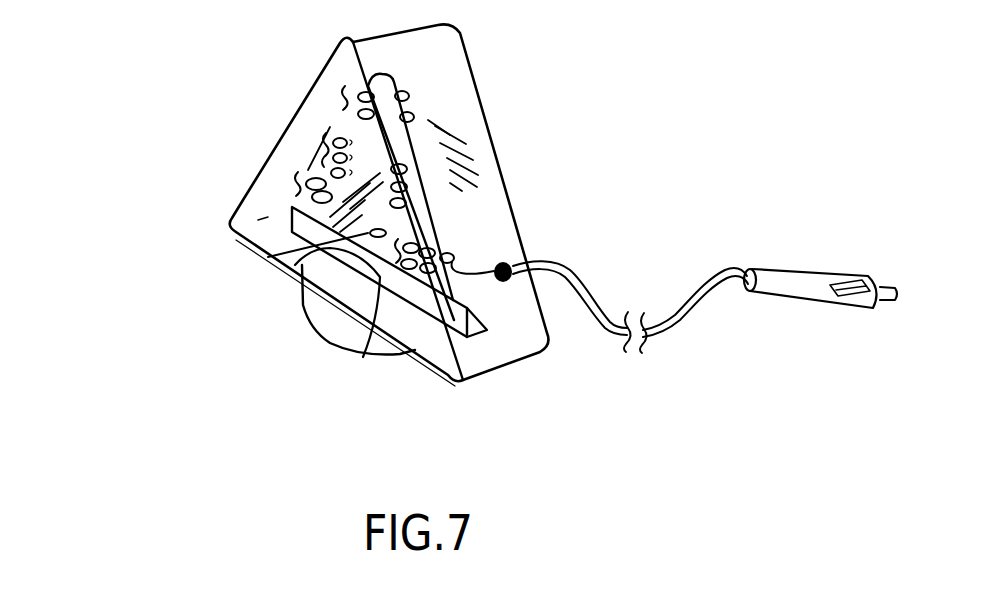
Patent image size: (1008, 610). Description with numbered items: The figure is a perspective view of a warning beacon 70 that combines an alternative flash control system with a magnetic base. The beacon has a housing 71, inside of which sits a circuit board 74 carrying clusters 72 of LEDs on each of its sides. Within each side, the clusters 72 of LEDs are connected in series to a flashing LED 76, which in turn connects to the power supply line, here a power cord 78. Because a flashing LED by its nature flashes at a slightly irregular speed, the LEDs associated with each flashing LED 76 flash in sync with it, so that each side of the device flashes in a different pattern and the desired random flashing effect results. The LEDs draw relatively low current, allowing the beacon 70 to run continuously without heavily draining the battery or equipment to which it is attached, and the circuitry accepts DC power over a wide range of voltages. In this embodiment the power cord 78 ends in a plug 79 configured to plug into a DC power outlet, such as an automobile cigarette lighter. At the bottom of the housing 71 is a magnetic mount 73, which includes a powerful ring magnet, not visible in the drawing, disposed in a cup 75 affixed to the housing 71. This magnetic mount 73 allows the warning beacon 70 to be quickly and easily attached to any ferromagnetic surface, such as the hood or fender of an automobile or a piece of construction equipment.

The beacon 70 is at (167, 71).
The housing 71 is at (508, 223).
The clusters of LEDs 72 is at (342, 100).
The magnetic mount 73 is at (300, 358).
The circuit board 74 is at (403, 147).
The cup 75 is at (340, 340).
The flashing LED 76 is at (302, 255).
The power cord 78 is at (597, 317).
The plug 79 is at (793, 277).